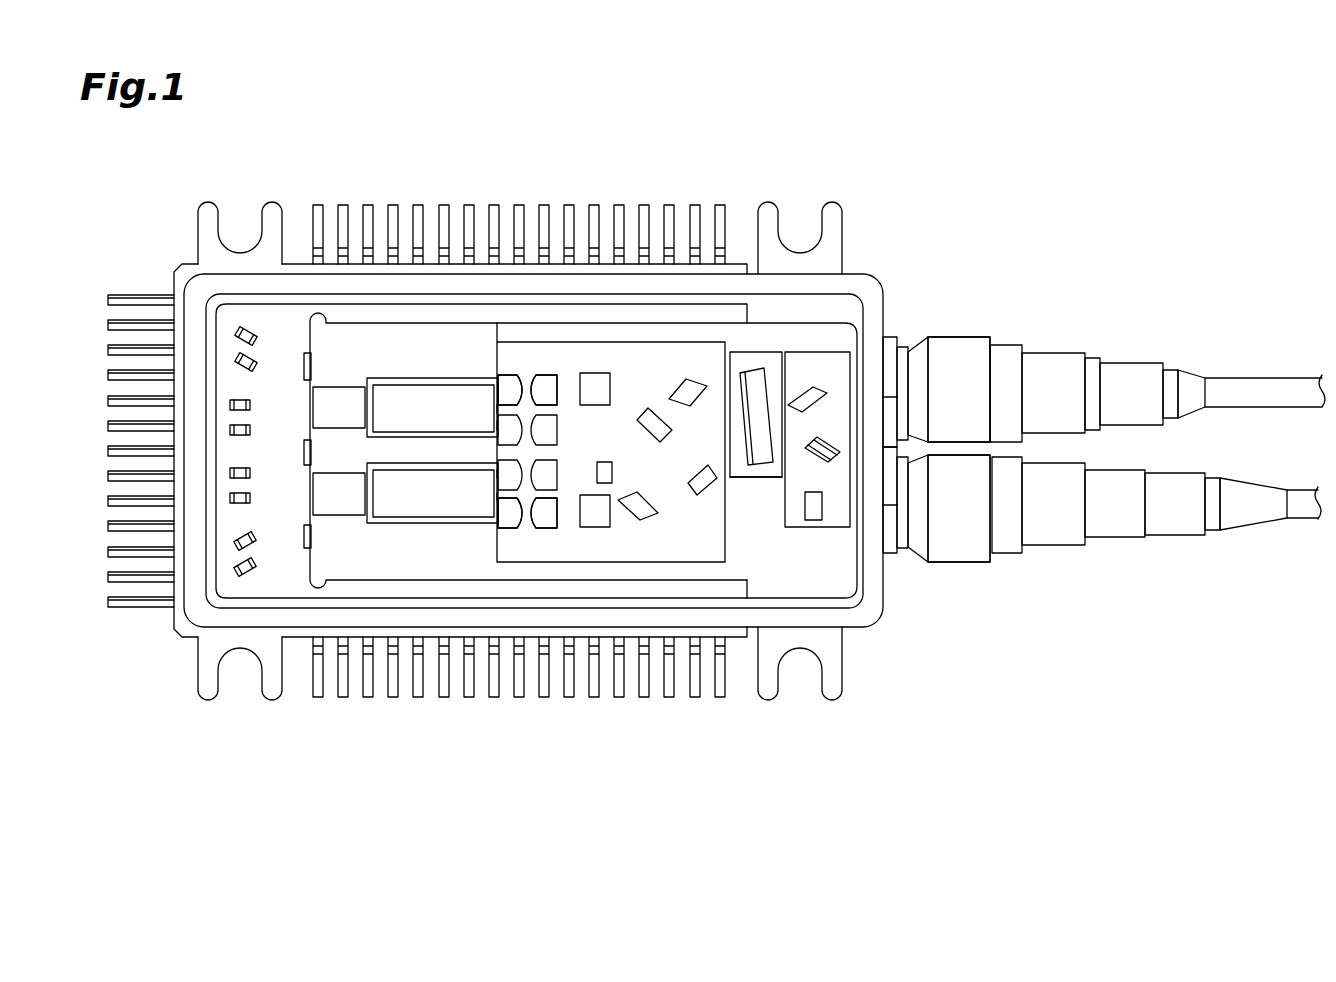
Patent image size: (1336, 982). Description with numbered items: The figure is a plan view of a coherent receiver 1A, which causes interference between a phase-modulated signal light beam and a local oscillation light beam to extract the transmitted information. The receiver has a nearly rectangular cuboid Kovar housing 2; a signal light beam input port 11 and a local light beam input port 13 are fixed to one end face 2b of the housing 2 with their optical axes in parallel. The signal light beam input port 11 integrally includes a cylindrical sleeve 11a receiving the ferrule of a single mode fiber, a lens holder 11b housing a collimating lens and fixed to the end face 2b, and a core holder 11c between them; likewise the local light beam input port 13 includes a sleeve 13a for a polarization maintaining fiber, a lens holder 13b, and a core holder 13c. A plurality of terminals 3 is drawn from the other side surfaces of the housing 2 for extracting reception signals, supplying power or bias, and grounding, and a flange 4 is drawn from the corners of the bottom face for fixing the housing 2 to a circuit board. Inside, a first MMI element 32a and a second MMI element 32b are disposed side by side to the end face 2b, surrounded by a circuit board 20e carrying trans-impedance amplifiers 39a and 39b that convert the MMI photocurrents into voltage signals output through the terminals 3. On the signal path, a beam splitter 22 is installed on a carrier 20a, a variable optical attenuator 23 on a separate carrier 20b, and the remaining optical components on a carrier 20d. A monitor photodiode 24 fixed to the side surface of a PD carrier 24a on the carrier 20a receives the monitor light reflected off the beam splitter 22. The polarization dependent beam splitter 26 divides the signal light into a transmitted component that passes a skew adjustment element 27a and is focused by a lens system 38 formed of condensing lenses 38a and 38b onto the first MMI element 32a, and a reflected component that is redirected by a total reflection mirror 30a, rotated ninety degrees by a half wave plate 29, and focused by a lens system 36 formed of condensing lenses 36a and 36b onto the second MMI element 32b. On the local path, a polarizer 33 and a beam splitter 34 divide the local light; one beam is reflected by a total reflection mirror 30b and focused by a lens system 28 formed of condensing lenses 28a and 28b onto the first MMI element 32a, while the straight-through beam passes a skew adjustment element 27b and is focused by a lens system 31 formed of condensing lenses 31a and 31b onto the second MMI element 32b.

The coherent receiver 1A is at (1110, 172).
The housing 2 is at (892, 295).
The one end face of the housing 2b is at (892, 328).
The terminals 3 is at (725, 190).
The flange 4 is at (197, 228).
The signal light beam input port 11 is at (1003, 338).
The sleeve 11a is at (1128, 377).
The lens holder 11b is at (963, 352).
The core holder 11c is at (1050, 370).
The local light beam input port 13 is at (968, 572).
The sleeve 13a is at (1175, 520).
The lens holder 13b is at (947, 568).
The core holder 13c is at (1052, 528).
The carrier 20a is at (808, 548).
The carrier 20b is at (745, 480).
The carrier 20d is at (682, 556).
The circuit board 20e is at (455, 548).
The beam splitter 22 is at (803, 385).
The variable optical attenuator 23 is at (757, 373).
The monitor photodiode 24 is at (822, 437).
The PD carrier 24a is at (808, 463).
The polarization dependent beam splitter 26 is at (687, 390).
The skew adjustment element 27a is at (593, 387).
The skew adjustment element 27b is at (595, 512).
The lens system 28 is at (418, 386).
The condensing lens 28a is at (495, 412).
The condensing lens 28b is at (497, 427).
The half wave plate 29 is at (603, 462).
The total reflection mirror 30a is at (700, 487).
The total reflection mirror 30b is at (650, 440).
The lens system 31 is at (640, 773).
The condensing lens 31a is at (507, 522).
The condensing lens 31b is at (550, 522).
The first MMI element 32a is at (480, 395).
The second MMI element 32b is at (393, 507).
The polarizer 33 is at (817, 520).
The beam splitter 34 is at (645, 505).
The lens system 36 is at (418, 471).
The condensing lens 36a is at (495, 475).
The condensing lens 36b is at (497, 497).
The lens system 38 is at (640, 152).
The condensing lens 38a is at (507, 387).
The condensing lens 38b is at (550, 385).
The amplifier 39a is at (333, 413).
The amplifier 39b is at (335, 492).